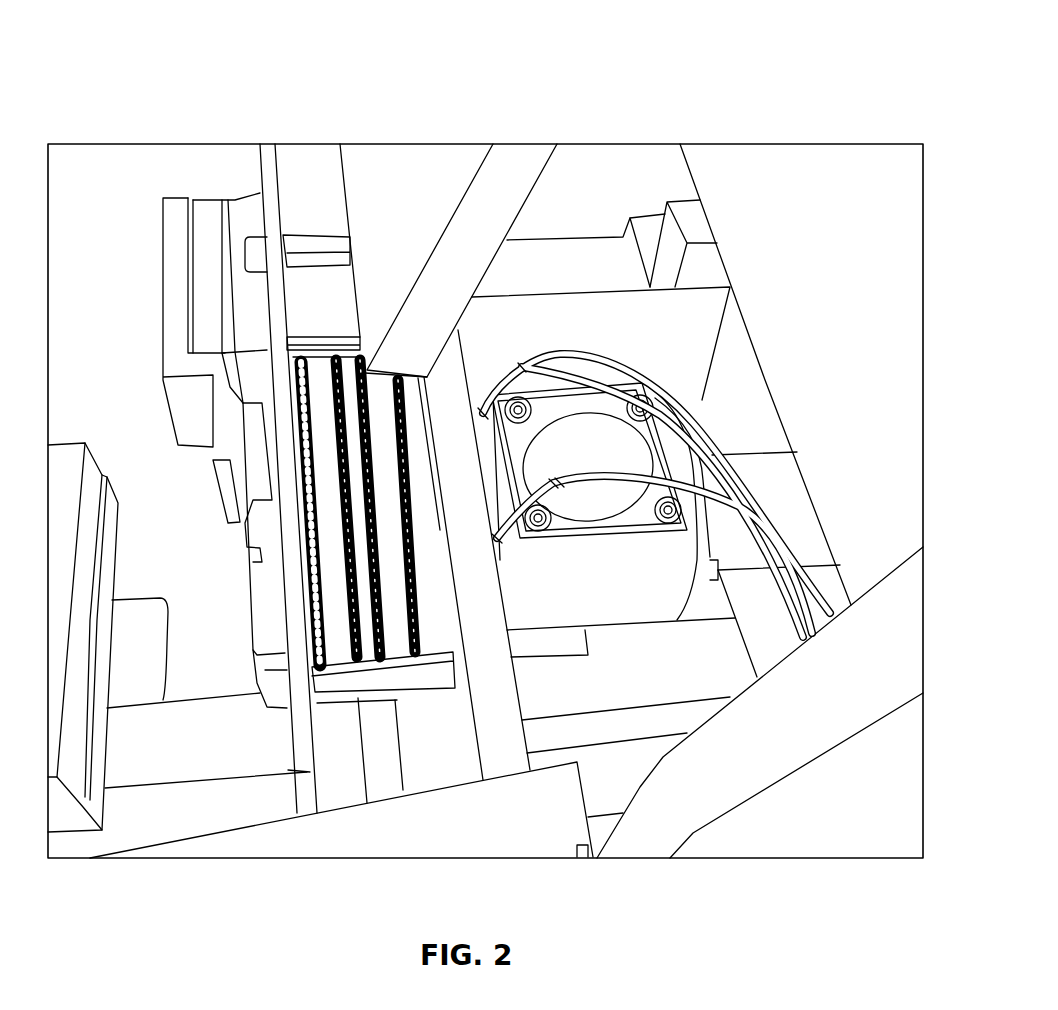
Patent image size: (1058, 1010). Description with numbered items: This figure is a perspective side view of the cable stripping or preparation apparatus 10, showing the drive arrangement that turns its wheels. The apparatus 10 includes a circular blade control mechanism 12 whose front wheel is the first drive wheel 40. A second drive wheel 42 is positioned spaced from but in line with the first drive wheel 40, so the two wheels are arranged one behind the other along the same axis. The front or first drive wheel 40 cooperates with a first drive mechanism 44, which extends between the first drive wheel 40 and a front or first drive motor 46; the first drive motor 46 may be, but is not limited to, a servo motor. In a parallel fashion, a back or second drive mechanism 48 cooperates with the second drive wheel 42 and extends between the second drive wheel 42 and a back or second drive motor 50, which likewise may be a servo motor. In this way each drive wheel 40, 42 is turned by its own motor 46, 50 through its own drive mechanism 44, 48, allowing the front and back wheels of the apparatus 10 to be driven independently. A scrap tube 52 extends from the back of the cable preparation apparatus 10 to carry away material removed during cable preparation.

The cable preparation apparatus 10 is at (538, 105).
The circular blade control mechanism 12 is at (358, 830).
The first drive wheel 40 is at (312, 653).
The second drive wheel 42 is at (420, 608).
The first drive mechanism 44 is at (323, 378).
The first drive motor 46 is at (677, 673).
The second drive mechanism 48 is at (383, 405).
The second drive motor 50 is at (593, 257).
The scrap tube 52 is at (673, 550).